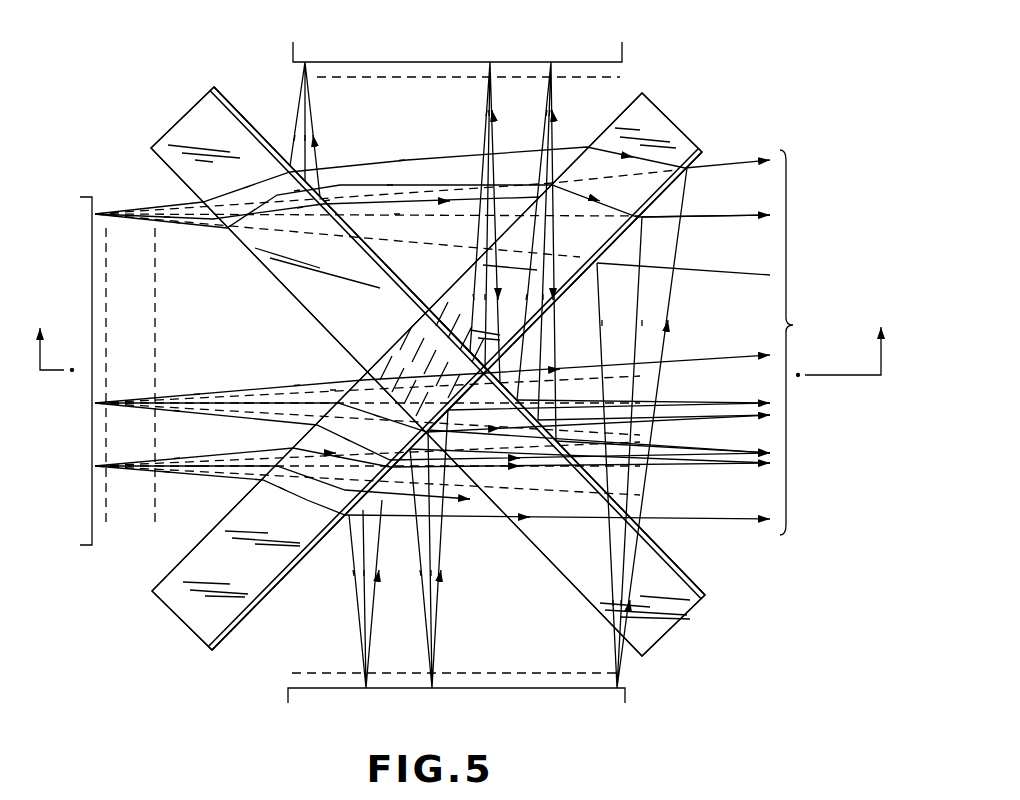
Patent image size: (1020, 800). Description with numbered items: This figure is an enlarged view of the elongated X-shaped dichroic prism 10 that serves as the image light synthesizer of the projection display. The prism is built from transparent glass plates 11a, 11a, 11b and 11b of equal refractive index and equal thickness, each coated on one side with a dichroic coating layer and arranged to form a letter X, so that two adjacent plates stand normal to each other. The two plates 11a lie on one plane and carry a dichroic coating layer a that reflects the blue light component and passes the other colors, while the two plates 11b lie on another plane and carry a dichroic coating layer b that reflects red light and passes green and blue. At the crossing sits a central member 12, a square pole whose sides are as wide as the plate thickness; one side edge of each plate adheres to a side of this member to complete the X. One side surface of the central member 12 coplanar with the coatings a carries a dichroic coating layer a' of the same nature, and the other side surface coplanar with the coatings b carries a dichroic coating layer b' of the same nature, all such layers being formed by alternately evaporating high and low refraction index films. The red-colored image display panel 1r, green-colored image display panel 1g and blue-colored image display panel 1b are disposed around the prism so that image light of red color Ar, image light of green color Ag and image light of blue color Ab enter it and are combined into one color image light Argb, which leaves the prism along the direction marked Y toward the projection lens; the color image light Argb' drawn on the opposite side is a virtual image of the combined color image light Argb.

The elongated X-shaped dichroic prism 10 is at (175, 630).
The transparent plate 11a is at (181, 132).
The transparent plate 11b is at (662, 130).
The dichroic coating layer a is at (468, 335).
The dichroic coating layer b is at (474, 391).
The dichroic coating layer a' is at (453, 313).
The dichroic coating layer b' is at (426, 368).
The central member 12 is at (385, 370).
The green-colored image display panel 1g is at (78, 415).
The blue-colored image display panel 1b is at (455, 62).
The red-colored image display panel 1r is at (532, 700).
The image light of green color Ag is at (122, 212).
The image light of blue color Ab is at (312, 96).
The image light of red color Ar is at (358, 618).
The color image light Argb is at (821, 342).
The color image light Argb' is at (386, 375).
The Y axis direction Y is at (461, 337).